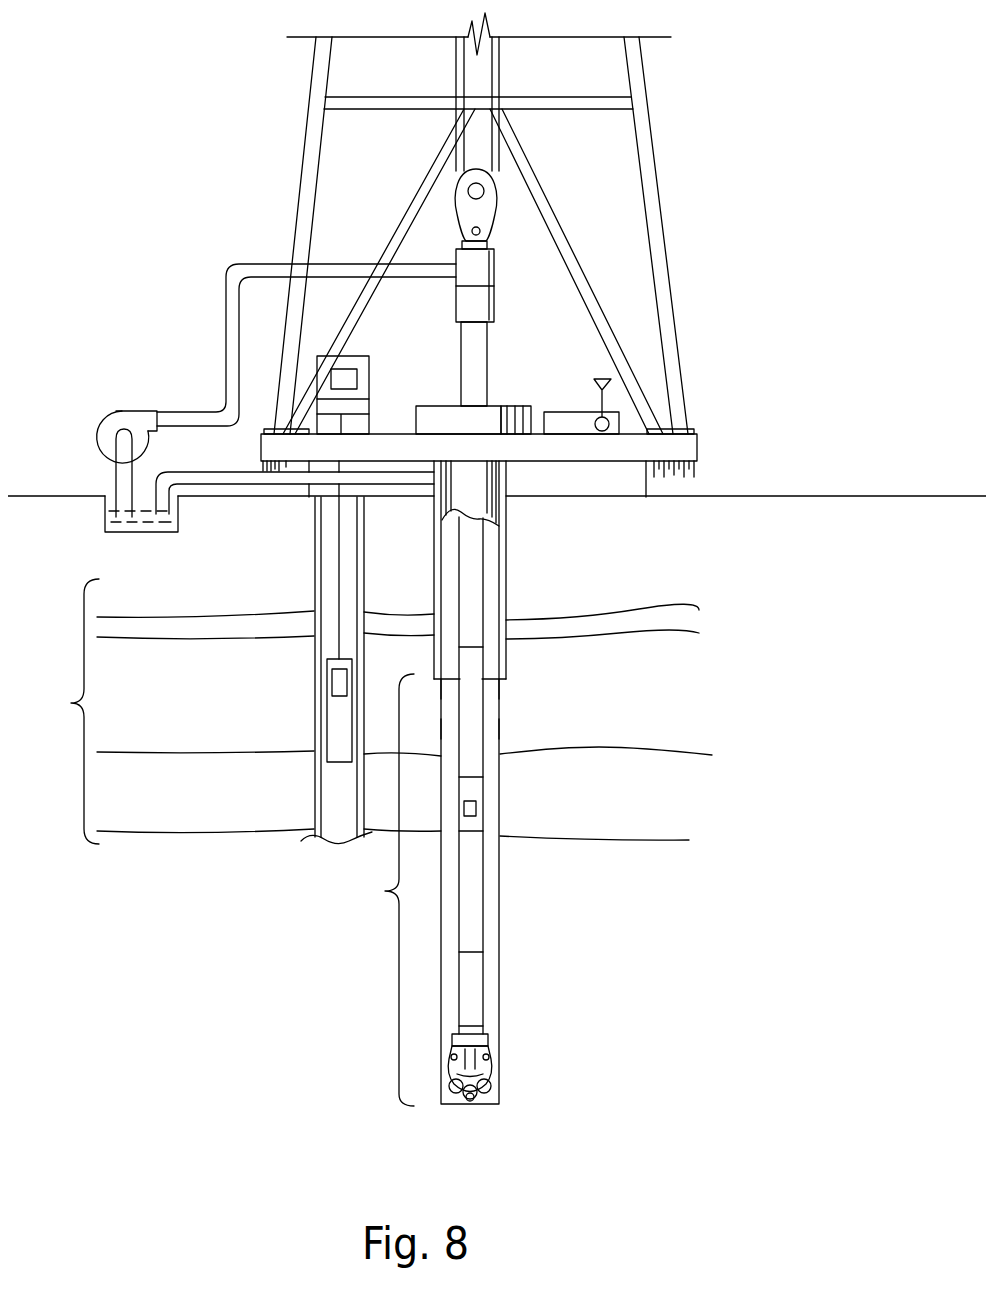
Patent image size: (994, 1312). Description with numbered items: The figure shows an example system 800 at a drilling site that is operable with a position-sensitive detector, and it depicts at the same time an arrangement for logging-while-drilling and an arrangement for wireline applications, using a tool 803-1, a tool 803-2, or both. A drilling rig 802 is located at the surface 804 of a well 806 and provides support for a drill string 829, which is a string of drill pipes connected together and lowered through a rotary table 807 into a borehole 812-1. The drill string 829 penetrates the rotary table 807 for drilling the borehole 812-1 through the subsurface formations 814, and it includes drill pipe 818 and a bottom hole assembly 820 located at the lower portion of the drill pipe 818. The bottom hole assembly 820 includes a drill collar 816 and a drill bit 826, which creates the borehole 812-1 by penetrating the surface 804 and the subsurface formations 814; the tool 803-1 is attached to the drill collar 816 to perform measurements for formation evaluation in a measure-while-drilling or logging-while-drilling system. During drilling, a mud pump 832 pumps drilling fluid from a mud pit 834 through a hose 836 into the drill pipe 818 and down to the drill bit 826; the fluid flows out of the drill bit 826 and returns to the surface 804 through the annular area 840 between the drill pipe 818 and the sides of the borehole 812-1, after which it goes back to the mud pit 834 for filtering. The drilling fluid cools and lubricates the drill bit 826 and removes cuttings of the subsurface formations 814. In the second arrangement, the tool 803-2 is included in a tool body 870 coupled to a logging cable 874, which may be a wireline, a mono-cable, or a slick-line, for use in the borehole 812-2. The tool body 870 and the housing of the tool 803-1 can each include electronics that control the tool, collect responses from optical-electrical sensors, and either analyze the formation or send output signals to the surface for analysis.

The system 800 is at (204, 70).
The drilling rig 802 is at (653, 121).
The surface 804 is at (718, 497).
The well 806 is at (521, 496).
The rotary table 807 is at (452, 405).
The borehole 812-1 is at (492, 618).
The borehole 812-2 is at (315, 605).
The subsurface formations 814 is at (367, 711).
The drill collar 816 is at (486, 786).
The drill pipe 818 is at (500, 690).
The bottom hole assembly 820 is at (375, 890).
The drill bit 826 is at (492, 1068).
The drill string 829 is at (487, 557).
The mud pump 832 is at (130, 412).
The mud pit 834 is at (110, 497).
The hose 836 is at (226, 348).
The annular area 840 is at (492, 733).
The tool body 870 is at (328, 720).
The logging cable 874 is at (342, 582).
The tool 803-1 is at (483, 812).
The tool 803-2 is at (333, 683).